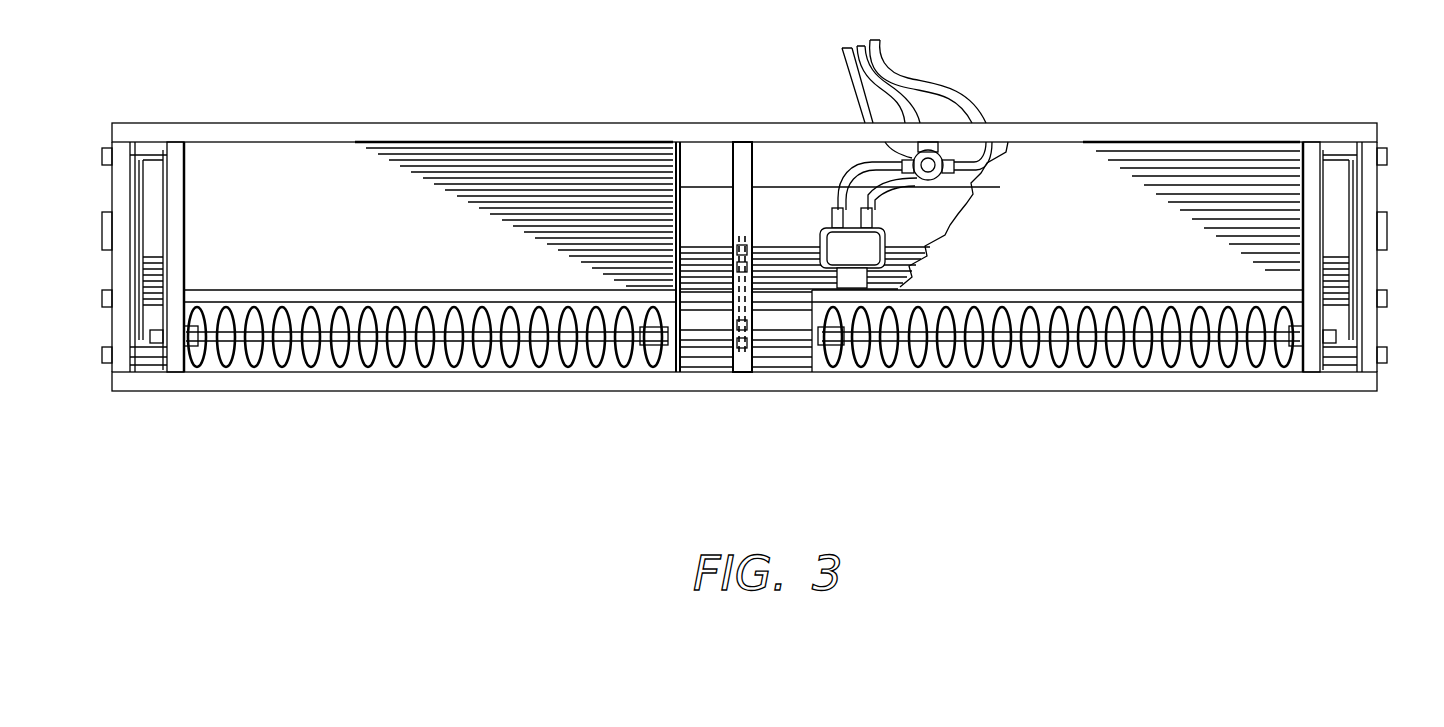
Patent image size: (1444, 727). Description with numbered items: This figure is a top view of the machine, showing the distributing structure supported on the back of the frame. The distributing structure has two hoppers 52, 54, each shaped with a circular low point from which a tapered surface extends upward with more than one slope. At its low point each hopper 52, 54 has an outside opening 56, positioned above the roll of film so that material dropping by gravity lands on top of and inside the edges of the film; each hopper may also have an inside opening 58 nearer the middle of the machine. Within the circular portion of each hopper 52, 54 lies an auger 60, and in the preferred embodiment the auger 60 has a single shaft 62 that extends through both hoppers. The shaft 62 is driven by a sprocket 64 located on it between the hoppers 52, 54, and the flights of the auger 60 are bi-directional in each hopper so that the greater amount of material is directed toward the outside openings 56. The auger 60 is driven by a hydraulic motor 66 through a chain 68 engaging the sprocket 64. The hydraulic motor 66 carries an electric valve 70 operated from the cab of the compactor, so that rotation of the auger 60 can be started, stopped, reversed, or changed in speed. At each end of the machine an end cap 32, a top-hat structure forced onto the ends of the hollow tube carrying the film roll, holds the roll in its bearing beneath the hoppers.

The end cap 32 is at (133, 195).
The hopper 52 is at (265, 160).
The hopper 54 is at (1058, 160).
The outside opening 56 is at (227, 346).
The inside opening 58 is at (652, 352).
The auger 60 is at (524, 369).
The shaft 62 is at (592, 352).
The sprocket 64 is at (750, 342).
The hydraulic motor 66 is at (872, 240).
The chain 68 is at (748, 236).
The electric valve 70 is at (930, 183).